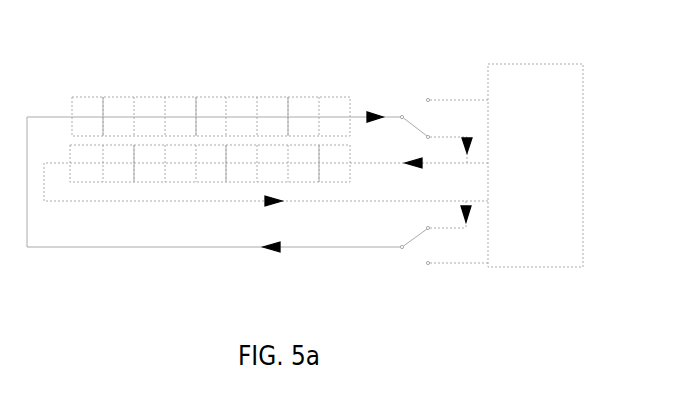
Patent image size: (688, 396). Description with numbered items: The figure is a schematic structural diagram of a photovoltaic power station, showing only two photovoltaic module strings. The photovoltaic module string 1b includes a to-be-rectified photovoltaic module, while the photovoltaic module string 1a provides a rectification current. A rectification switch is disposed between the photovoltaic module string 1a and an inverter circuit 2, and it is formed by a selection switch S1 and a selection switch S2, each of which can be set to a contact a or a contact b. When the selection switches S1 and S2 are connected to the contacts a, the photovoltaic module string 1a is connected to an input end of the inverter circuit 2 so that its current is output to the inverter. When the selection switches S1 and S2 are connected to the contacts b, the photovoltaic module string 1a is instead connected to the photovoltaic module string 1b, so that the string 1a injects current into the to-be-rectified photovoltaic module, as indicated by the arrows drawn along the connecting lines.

The photovoltaic module string 1a is at (351, 97).
The photovoltaic module string 1b is at (351, 182).
The inverter circuit 2 is at (527, 64).
The selection switch S1 is at (433, 120).
The selection switch S2 is at (430, 242).